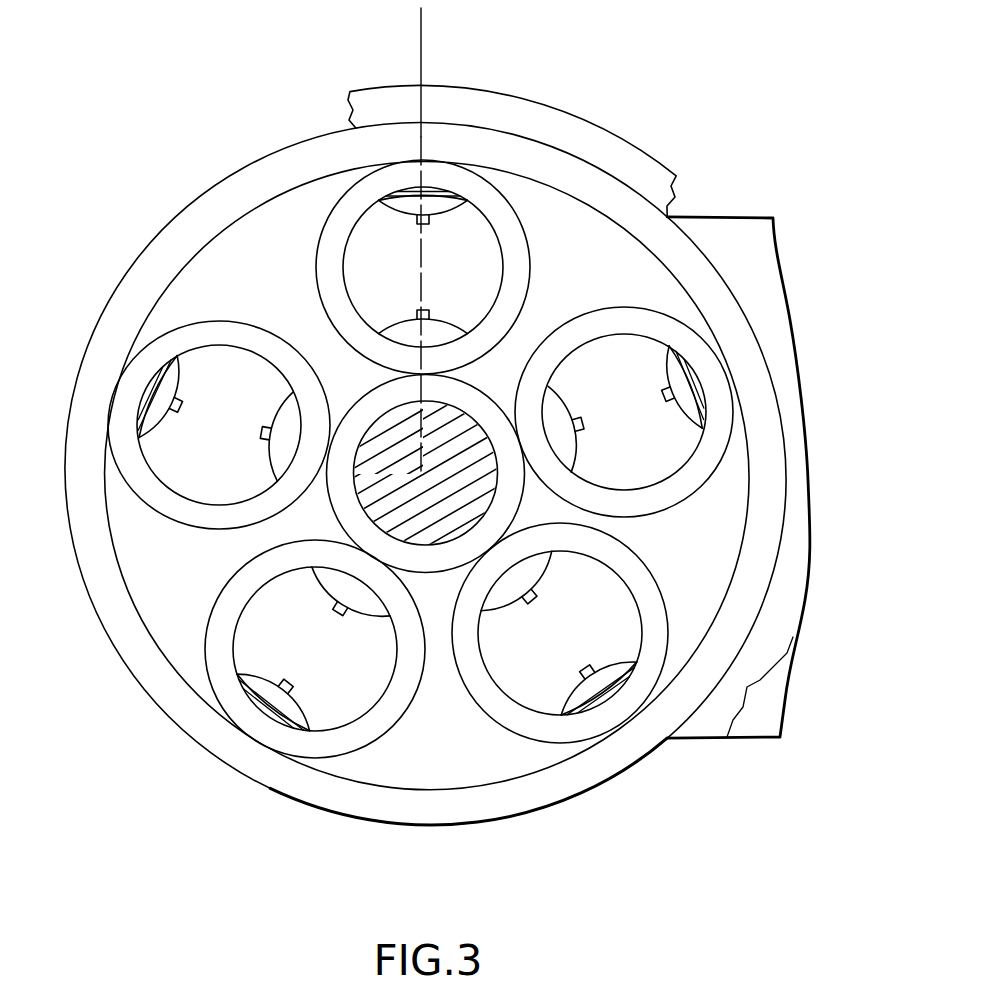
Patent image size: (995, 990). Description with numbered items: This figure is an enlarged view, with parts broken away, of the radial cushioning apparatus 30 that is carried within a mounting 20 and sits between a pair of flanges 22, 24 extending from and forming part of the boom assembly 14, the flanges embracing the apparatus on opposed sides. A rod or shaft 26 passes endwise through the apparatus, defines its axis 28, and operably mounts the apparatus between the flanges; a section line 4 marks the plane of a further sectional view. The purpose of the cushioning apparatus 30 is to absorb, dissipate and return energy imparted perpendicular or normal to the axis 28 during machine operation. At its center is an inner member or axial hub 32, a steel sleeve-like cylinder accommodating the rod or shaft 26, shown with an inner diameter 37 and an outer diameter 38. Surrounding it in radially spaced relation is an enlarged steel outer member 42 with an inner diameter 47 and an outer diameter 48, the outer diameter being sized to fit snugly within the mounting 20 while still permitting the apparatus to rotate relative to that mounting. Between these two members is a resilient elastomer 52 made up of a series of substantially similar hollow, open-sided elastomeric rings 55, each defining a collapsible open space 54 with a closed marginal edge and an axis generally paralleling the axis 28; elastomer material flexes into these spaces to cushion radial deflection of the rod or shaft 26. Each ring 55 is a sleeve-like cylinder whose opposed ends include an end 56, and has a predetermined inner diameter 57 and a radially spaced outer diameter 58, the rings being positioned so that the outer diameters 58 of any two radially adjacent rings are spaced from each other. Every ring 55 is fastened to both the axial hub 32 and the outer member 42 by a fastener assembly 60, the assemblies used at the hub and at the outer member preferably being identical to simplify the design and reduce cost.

The section line 4- 4 is at (421, 8).
The boom assembly 14 is at (699, 760).
The mounting 20 is at (472, 105).
The flange 22 is at (757, 730).
The flange 24 is at (742, 233).
The rod or shaft 26 is at (375, 503).
The axis 28 is at (424, 480).
The radial cushioning apparatus 30 is at (117, 232).
The inner member or axial hub 32 is at (610, 528).
The inner diameter 37 is at (540, 570).
The outer diameter 38 is at (538, 367).
The outer member 42 is at (150, 696).
The inner diameter 47 is at (388, 783).
The outer diameter 48 is at (104, 630).
The resilient elastomer 52 is at (286, 213).
The collapsible open space 54 is at (608, 345).
The hollow elastomeric ring 55 is at (327, 247).
The end of elastomeric ring 56 is at (205, 635).
The inner diameter 57 is at (485, 517).
The outer diameter 58 is at (425, 470).
The fastener assembly 60 is at (414, 228).